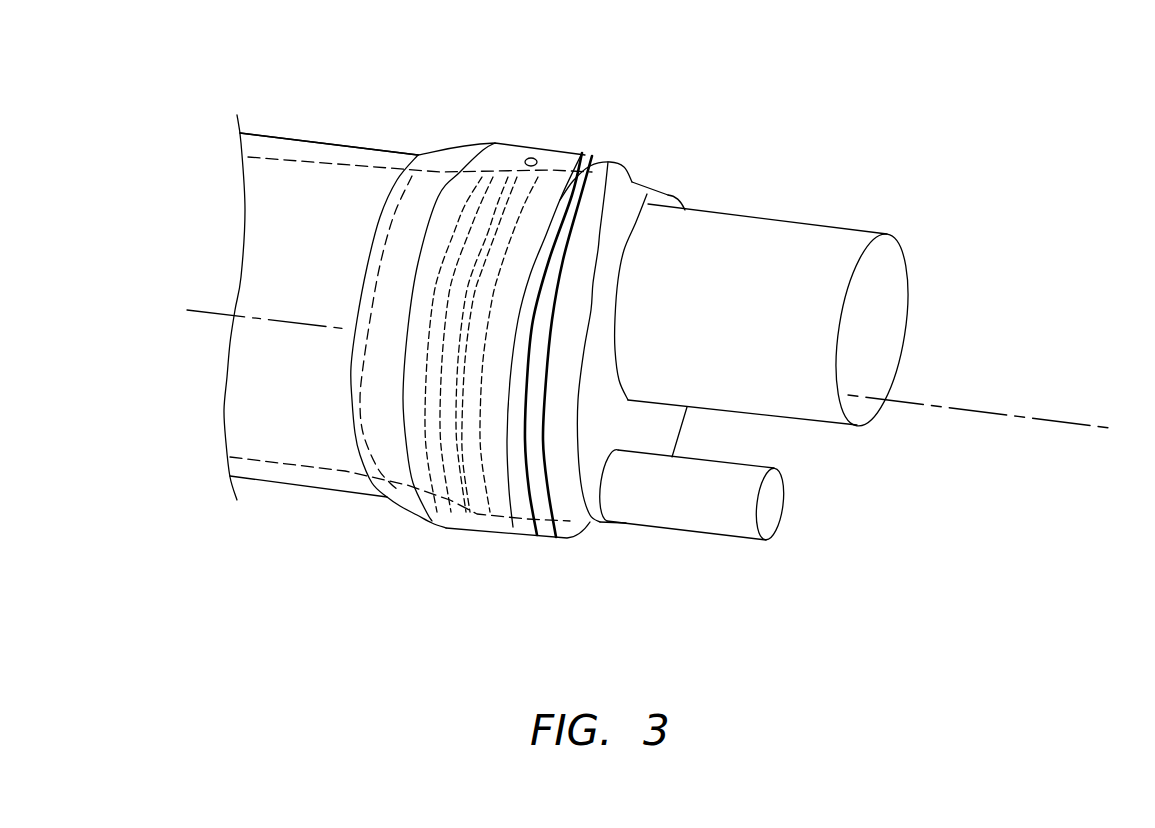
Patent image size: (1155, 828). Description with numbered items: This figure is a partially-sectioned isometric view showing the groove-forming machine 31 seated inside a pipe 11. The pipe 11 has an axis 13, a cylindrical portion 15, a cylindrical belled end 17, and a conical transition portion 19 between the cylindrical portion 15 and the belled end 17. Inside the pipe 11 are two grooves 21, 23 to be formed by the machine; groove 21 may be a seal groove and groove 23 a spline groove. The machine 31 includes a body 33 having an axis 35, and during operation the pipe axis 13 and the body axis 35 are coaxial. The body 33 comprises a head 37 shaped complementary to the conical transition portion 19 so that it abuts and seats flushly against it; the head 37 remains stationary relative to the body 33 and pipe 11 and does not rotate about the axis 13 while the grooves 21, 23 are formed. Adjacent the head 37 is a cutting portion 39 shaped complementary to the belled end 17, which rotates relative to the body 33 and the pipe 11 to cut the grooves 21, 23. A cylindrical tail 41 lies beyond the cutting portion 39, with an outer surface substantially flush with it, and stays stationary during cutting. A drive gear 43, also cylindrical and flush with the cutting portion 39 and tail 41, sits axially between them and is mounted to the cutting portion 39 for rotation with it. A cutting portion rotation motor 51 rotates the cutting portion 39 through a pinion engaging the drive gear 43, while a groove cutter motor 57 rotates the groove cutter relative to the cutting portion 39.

The pipe 11 is at (278, 512).
The axis 13 is at (296, 322).
The cylindrical portion 15 is at (307, 153).
The cylindrical belled end 17 is at (552, 157).
The conical transition portion 19 is at (452, 148).
The groove 21 is at (490, 173).
The groove 23 is at (518, 180).
The machine 31 is at (908, 88).
The body 33 is at (648, 155).
The axis 35 is at (1000, 411).
The head 37 is at (427, 193).
The cutting portion 39 is at (515, 515).
The tail 41 is at (670, 196).
The drive gear 43 is at (593, 187).
The cutting portion rotation motor 51 is at (773, 512).
The groove cutter motor 57 is at (887, 300).